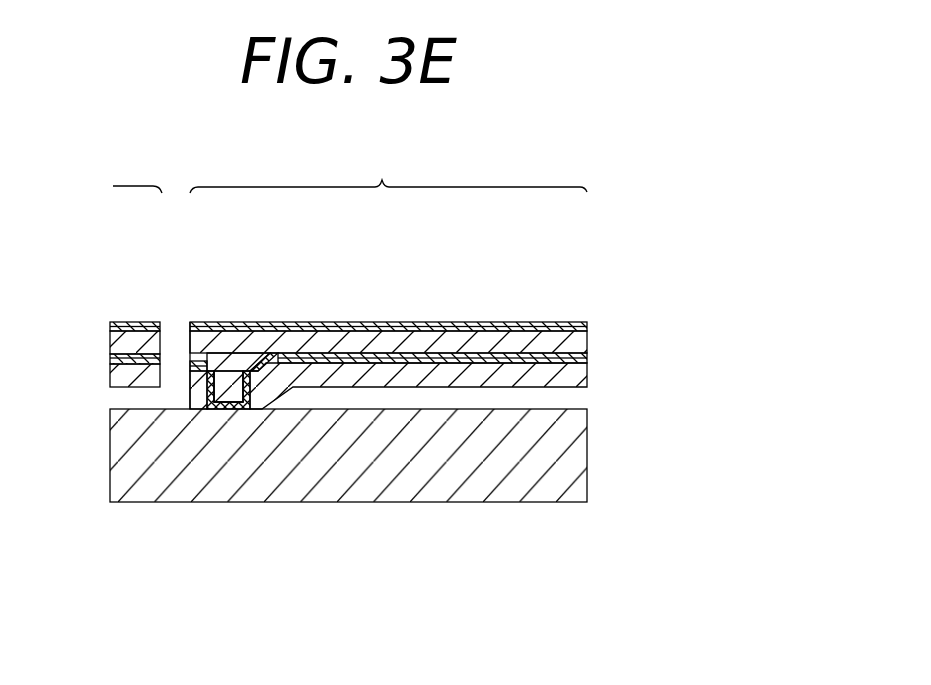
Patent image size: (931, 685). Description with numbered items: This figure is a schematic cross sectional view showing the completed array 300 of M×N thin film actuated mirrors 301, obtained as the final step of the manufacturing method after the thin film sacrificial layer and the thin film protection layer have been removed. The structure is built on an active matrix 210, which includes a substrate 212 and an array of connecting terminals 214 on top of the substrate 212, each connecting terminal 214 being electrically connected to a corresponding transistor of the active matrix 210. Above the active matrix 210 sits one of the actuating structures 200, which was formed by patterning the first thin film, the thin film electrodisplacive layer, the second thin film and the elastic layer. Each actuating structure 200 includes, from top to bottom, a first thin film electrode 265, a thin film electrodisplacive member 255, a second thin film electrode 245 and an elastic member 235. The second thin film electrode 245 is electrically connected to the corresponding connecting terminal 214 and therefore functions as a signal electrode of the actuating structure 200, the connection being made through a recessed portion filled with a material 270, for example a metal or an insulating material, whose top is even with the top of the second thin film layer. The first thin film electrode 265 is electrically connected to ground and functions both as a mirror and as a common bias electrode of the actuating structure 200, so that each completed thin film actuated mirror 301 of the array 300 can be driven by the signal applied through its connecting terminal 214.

The array of thin film actuated mirrors 300 is at (643, 122).
The thin film actuated mirror 301 is at (388, 167).
The actuating structure 200 is at (395, 380).
The active matrix 210 is at (395, 494).
The substrate 212 is at (322, 470).
The connecting terminal 214 is at (220, 405).
The elastic member 235 is at (455, 375).
The second thin film electrode 245 is at (380, 357).
The thin film electrodisplacive member 255 is at (300, 345).
The first thin film electrode 265 is at (237, 325).
The material 270 is at (218, 368).